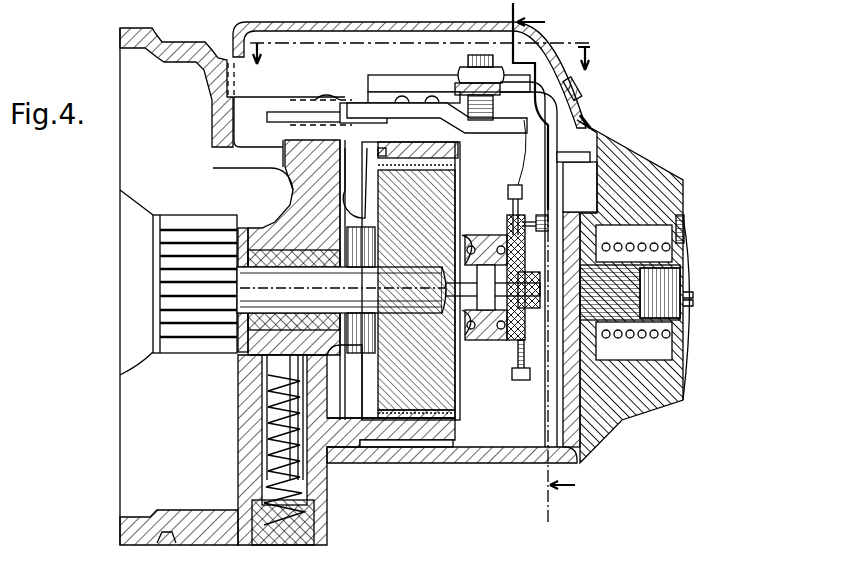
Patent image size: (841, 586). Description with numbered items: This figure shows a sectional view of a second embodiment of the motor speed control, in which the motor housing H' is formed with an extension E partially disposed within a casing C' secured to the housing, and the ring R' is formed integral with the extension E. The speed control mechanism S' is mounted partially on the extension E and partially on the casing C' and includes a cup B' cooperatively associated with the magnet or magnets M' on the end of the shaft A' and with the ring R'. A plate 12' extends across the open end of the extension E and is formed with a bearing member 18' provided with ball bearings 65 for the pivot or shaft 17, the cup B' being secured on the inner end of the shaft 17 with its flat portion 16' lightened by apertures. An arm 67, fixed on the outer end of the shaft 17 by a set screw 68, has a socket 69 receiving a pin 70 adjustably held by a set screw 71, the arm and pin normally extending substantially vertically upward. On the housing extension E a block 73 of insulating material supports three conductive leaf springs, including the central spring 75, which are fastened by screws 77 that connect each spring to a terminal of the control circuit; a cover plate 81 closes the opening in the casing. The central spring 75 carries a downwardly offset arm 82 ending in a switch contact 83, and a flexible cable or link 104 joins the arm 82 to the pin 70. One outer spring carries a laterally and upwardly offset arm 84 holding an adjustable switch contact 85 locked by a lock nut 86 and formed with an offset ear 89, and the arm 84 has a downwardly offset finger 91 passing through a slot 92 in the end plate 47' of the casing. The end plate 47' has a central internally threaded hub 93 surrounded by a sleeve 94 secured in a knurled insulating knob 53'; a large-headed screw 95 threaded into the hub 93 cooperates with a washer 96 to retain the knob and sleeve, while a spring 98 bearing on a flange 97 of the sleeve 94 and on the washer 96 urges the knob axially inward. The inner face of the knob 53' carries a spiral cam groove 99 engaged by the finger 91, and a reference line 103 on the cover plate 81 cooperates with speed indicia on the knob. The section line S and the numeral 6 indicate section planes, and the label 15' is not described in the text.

The shaft A' is at (287, 286).
The motor housing H' is at (185, 541).
The casing C' is at (305, 450).
The extension E is at (290, 180).
The pivot or shaft 17 is at (525, 278).
The plate 12' is at (414, 296).
The flat portion of the cup 16' is at (427, 281).
The armature plate 15' is at (364, 153).
The cup B' is at (401, 426).
The magnet or magnets M' is at (347, 382).
The ring R' is at (406, 461).
The speed control mechanism S' is at (452, 466).
The block of insulating material 73 is at (292, 100).
The screws 77 is at (333, 98).
The central leaf spring 75 is at (363, 113).
The laterally and upwardly offset arm 84 is at (408, 84).
The downwardly offset arm 82 is at (425, 118).
The switch contact 83 is at (463, 118).
The offset ear 89 is at (460, 74).
The switch contact 85 is at (486, 55).
The lock nut 86 is at (503, 76).
The finger 91 is at (603, 143).
The cover plate 81 is at (358, 33).
The end plate 47' is at (600, 120).
The reference line 103 is at (582, 86).
The spiral cam groove 99 is at (620, 162).
The slot 92 is at (556, 170).
The flexible cable or link 104 is at (520, 150).
The pin 70 is at (523, 196).
The set screw 71 is at (542, 216).
The ball bearings 65 is at (480, 236).
The arm 67 is at (502, 248).
The socket 69 is at (526, 252).
The set screw 68 is at (522, 345).
The bearing member 18' is at (483, 324).
The knurled knob 53' is at (644, 291).
The flange 97 is at (633, 180).
The spring 98 is at (686, 188).
The washer 96 is at (686, 228).
The large-headed screw 95 is at (694, 270).
The hub 93 is at (693, 296).
The sleeve 94 is at (693, 307).
The section line 6- 6 is at (553, 264).
The section line S- S is at (429, 68).